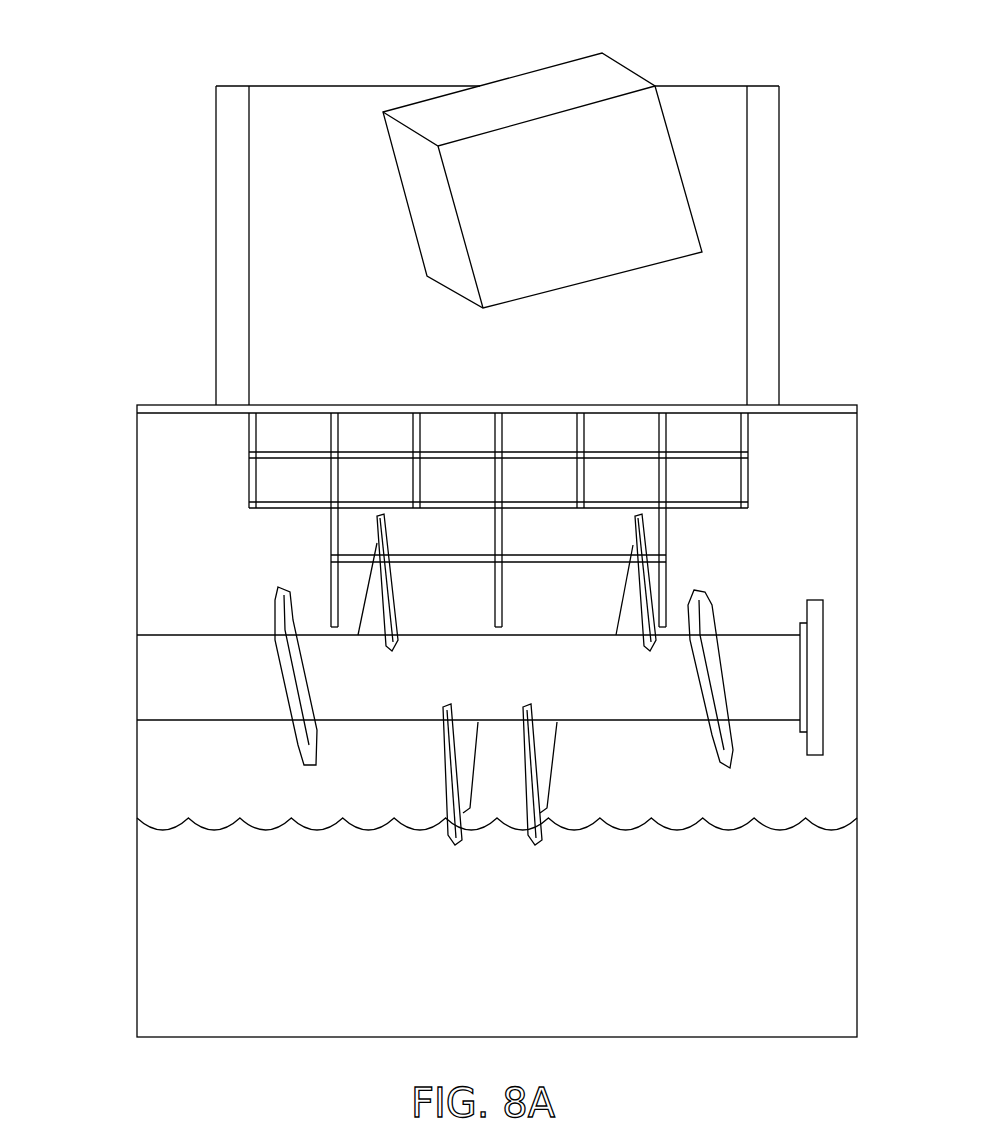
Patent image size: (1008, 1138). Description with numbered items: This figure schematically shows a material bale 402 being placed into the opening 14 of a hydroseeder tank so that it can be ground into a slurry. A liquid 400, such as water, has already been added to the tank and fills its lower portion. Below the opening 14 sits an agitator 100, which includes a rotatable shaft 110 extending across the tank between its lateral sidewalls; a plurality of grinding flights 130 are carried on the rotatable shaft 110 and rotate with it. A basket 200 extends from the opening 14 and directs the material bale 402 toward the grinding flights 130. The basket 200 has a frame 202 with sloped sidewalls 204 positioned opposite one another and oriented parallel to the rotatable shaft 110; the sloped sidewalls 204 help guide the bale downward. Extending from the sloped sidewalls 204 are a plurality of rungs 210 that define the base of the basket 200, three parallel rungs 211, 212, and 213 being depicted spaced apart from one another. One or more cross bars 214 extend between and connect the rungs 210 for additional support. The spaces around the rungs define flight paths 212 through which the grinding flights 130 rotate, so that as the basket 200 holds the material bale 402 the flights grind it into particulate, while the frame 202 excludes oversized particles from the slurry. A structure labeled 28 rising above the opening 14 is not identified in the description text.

The opening 14 is at (566, 161).
The chute 28 is at (779, 228).
The agitator 100 is at (128, 458).
The rotatable shaft 110 is at (200, 635).
The grinding flights 130 is at (278, 751).
The basket 200 is at (469, 509).
The frame 202 is at (496, 461).
The sloped sidewalls 204 is at (249, 478).
The rungs 210 is at (729, 602).
The rung 211 is at (533, 581).
The flight path 212 is at (372, 564).
The rung 213 is at (331, 580).
The cross bars 214 is at (458, 562).
The liquid 400 is at (600, 958).
The material bale 402 is at (628, 67).